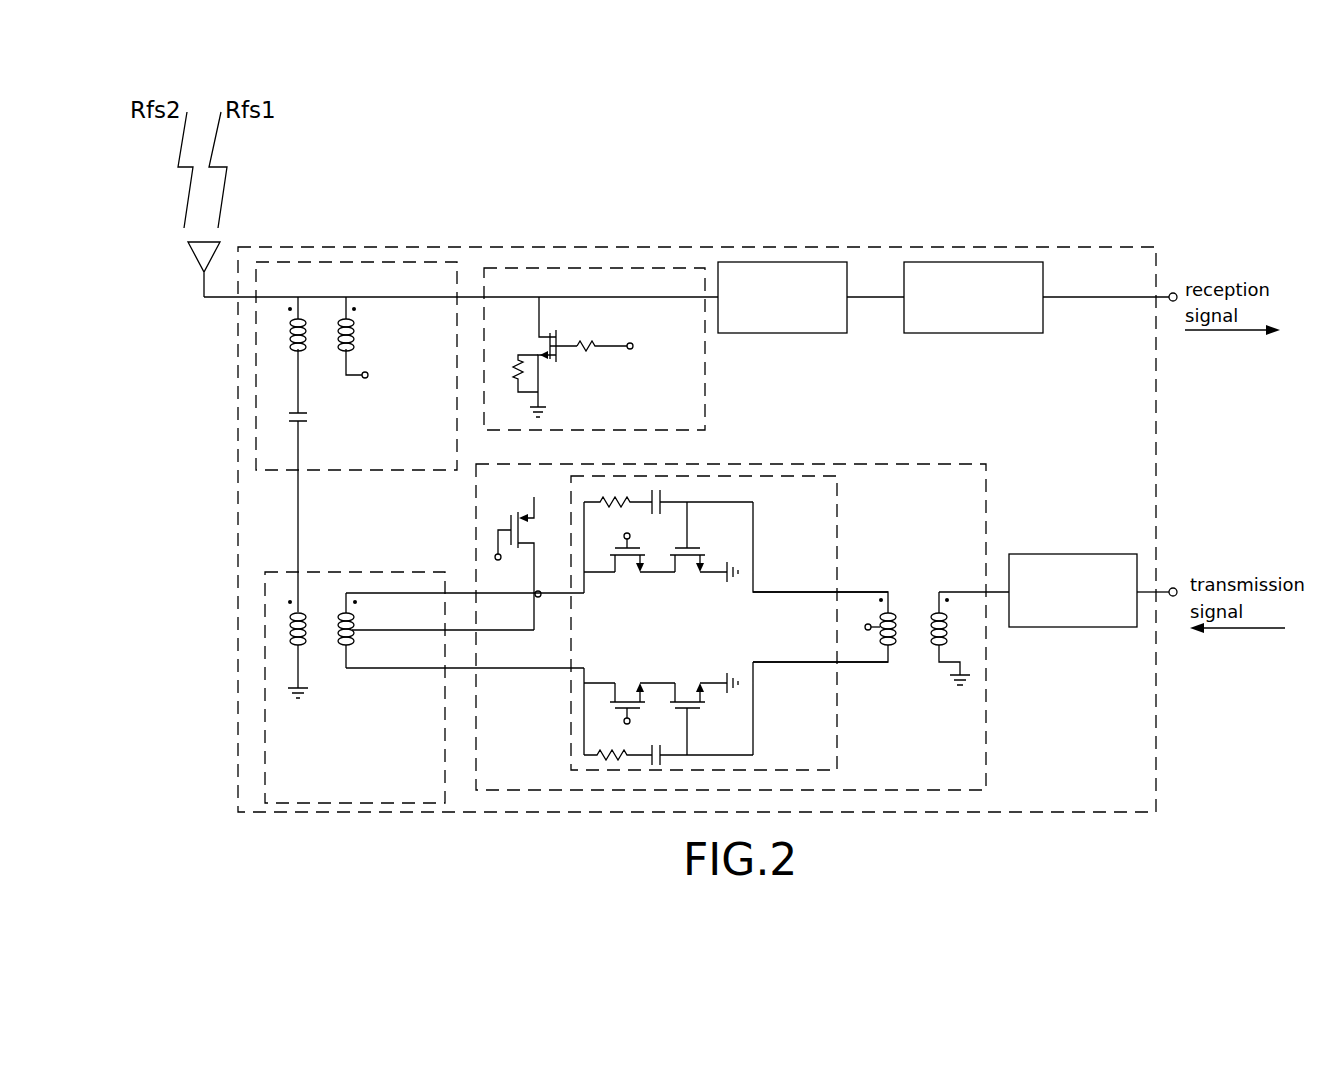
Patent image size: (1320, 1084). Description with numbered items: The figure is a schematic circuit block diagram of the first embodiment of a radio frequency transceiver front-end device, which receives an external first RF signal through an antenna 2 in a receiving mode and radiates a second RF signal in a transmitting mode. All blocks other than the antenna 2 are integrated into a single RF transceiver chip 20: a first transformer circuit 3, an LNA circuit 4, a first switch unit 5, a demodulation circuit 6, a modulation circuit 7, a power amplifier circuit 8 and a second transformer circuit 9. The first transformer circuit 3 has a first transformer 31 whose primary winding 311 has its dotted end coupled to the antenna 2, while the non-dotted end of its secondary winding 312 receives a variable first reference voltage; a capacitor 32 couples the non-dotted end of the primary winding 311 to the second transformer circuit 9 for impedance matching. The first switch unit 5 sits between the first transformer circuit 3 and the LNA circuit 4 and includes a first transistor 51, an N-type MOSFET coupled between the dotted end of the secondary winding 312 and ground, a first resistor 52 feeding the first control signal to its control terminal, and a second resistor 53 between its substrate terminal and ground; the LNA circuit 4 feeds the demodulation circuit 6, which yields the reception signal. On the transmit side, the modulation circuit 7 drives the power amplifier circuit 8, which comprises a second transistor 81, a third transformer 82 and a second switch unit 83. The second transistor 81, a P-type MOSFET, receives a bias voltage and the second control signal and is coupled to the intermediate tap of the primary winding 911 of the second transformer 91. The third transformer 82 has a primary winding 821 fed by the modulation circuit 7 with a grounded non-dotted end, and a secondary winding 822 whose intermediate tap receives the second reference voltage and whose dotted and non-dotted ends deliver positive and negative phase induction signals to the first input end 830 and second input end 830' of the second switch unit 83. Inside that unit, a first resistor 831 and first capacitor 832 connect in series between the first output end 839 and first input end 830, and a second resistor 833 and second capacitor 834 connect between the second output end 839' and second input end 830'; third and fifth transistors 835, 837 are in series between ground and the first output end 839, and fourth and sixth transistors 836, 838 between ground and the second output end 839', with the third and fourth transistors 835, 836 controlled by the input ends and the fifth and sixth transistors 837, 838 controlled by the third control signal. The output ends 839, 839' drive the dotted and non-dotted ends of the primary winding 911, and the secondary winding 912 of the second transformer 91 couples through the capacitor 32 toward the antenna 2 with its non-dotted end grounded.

The antenna 2 is at (196, 257).
The RF transceiver chip 20 is at (852, 247).
The first transformer circuit 3 is at (375, 262).
The first transformer 31 is at (322, 332).
The primary winding 311 is at (293, 333).
The secondary winding 312 is at (352, 330).
The capacitor 32 is at (295, 413).
The low noise amplifier circuit 4 is at (783, 262).
The first switch unit 5 is at (706, 345).
The first transistor 51 is at (556, 322).
The first resistor 52 is at (584, 344).
The second resistor 53 is at (520, 368).
The demodulation circuit 6 is at (967, 262).
The modulation circuit 7 is at (1073, 555).
The power amplifier circuit 8 is at (988, 490).
The second transistor 81 is at (507, 520).
The third transformer 82 is at (912, 605).
The primary winding 821 is at (950, 636).
The secondary winding 822 is at (900, 632).
The second switch unit 83 is at (838, 500).
The first input end 830 is at (820, 576).
The second input end 830' is at (822, 684).
The first resistor 831 is at (608, 502).
The first capacitor 832 is at (668, 500).
The second resistor 833 is at (600, 752).
The second capacitor 834 is at (652, 762).
The third transistor 835 is at (686, 575).
The fourth transistor 836 is at (683, 683).
The fifth transistor 837 is at (623, 575).
The sixth transistor 838 is at (627, 683).
The first output end 839 is at (465, 623).
The second output end 839' is at (465, 691).
The second transformer circuit 9 is at (325, 572).
The second transformer 91 is at (325, 640).
The primary winding 911 is at (355, 622).
The secondary winding 912 is at (290, 625).